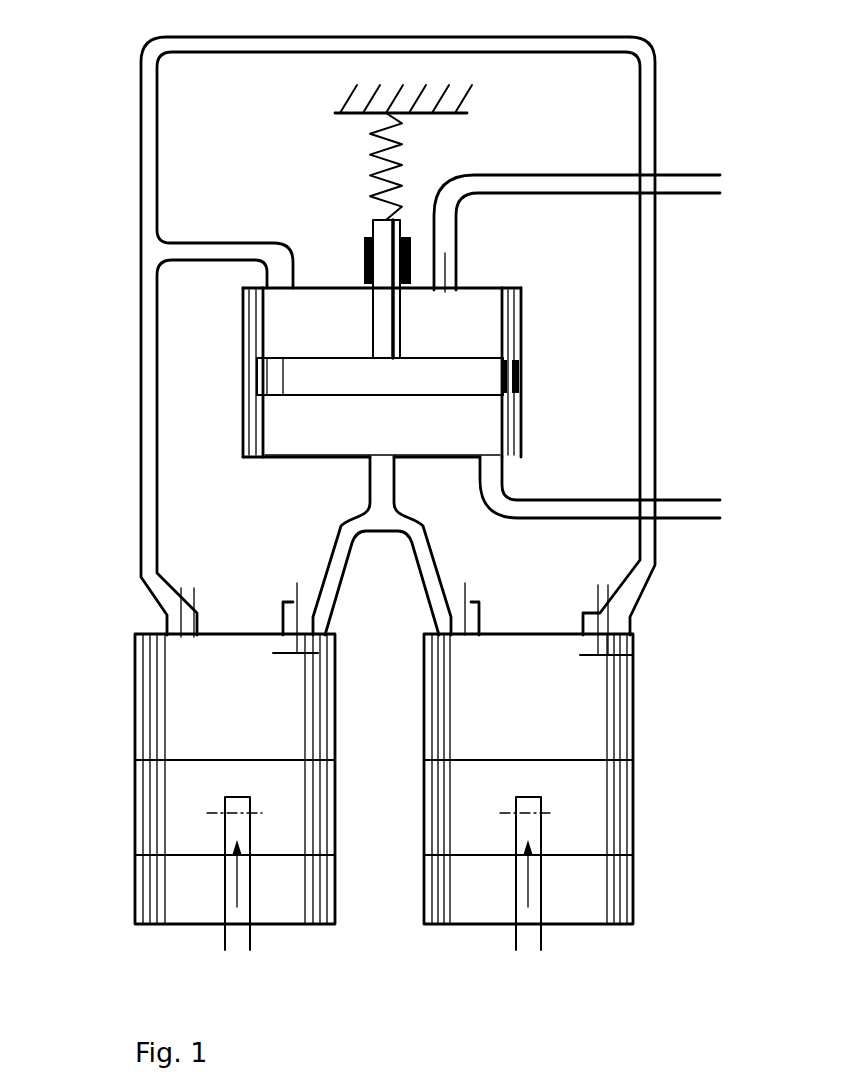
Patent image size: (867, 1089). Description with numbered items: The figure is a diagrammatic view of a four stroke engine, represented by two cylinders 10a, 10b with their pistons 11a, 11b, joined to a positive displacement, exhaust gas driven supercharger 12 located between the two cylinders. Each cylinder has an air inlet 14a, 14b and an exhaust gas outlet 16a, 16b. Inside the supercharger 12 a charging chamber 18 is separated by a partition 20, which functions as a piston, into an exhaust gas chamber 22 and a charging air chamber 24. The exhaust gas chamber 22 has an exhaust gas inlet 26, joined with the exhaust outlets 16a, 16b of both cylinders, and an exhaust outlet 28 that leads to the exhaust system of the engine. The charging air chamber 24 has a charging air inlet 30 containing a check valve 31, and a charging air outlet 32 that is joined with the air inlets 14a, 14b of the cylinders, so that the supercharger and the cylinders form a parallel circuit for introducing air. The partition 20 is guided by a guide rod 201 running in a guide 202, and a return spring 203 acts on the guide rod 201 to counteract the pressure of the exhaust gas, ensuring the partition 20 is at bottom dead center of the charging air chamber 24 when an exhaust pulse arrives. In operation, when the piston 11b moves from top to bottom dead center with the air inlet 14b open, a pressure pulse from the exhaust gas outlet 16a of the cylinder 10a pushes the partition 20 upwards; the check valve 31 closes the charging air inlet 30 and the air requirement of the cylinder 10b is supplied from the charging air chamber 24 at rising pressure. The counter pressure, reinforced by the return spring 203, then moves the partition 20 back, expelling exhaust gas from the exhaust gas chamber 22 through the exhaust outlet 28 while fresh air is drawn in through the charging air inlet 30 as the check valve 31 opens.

The cylinder 10a is at (137, 715).
The cylinder 10b is at (633, 670).
The piston 11a is at (192, 797).
The piston 11b is at (607, 807).
The exhaust gas driven supercharger 12 is at (522, 407).
The air inlet 14a is at (188, 608).
The air inlet 14b is at (592, 608).
The exhaust gas outlet 16a is at (288, 612).
The exhaust gas outlet 16b is at (468, 605).
The charging chamber 18 is at (486, 307).
The partition 20 is at (497, 375).
The exhaust gas chamber 22 is at (490, 427).
The charging air chamber 24 is at (495, 322).
The exhaust gas inlet 26 is at (370, 480).
The exhaust outlet 28 is at (518, 498).
The charging air inlet 30 is at (532, 173).
The check valve 31 is at (450, 270).
The charging air outlet 32 is at (197, 242).
The guide rod 201 is at (372, 227).
The guide 202 is at (367, 262).
The return spring 203 is at (398, 150).